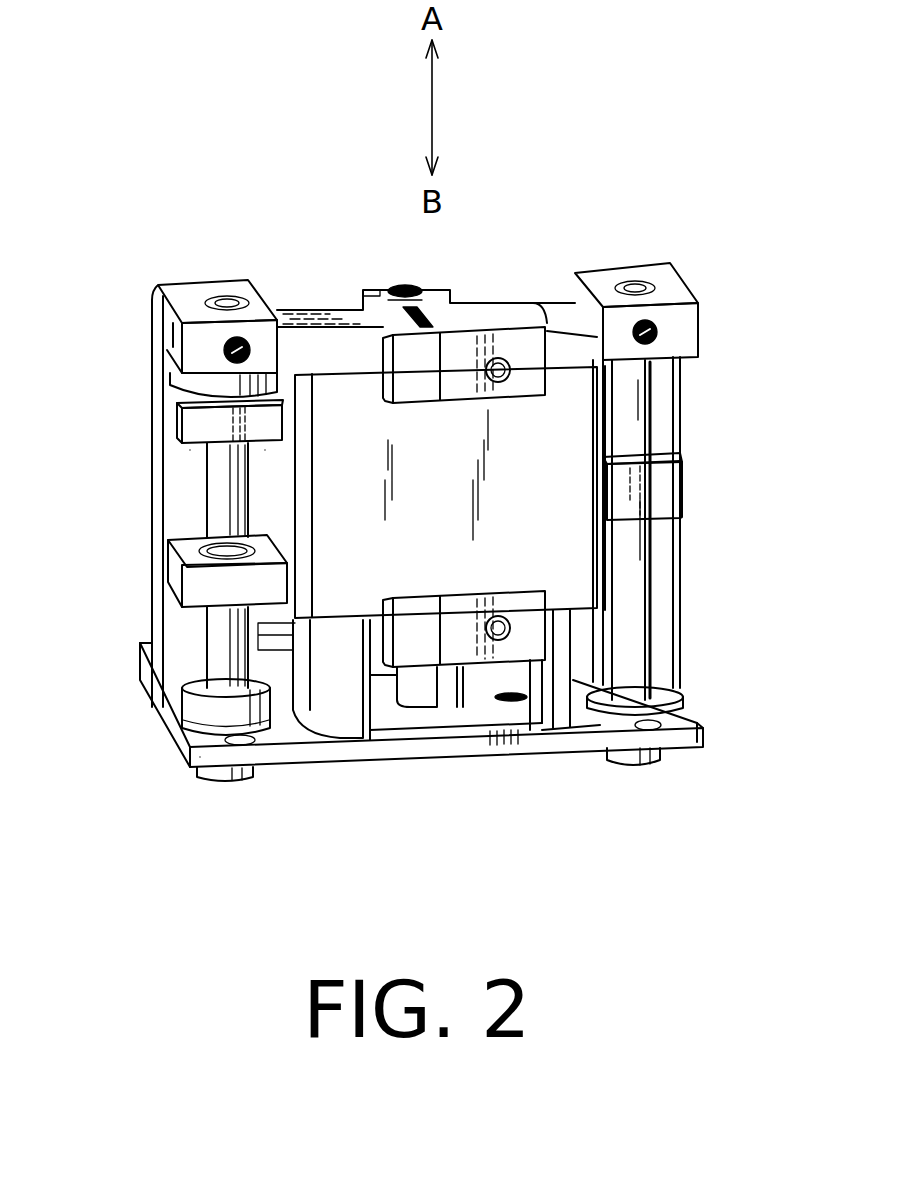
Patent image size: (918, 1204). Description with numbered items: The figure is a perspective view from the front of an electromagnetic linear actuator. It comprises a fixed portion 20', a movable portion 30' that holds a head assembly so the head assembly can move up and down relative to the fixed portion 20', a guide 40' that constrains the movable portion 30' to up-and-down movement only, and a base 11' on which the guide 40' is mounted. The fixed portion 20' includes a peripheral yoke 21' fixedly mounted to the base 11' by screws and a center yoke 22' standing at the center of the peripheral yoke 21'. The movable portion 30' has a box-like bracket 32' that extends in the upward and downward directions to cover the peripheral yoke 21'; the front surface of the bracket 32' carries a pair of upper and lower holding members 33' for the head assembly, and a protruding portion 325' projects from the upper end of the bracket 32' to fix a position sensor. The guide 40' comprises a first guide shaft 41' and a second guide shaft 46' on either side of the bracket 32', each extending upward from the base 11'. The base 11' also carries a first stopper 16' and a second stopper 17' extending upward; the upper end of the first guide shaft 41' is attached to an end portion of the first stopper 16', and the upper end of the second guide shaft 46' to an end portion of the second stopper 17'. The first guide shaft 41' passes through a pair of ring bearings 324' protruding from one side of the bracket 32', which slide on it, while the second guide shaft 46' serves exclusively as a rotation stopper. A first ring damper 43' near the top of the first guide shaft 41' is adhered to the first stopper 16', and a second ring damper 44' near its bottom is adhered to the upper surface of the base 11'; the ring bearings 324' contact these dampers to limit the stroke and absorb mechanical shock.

The base 11' is at (445, 802).
The first stopper 16' is at (176, 493).
The second stopper 17' is at (684, 475).
The fixed portion 20' is at (421, 763).
The peripheral yoke 21' is at (314, 737).
The center yoke 22' is at (485, 732).
The movable portion 30' is at (437, 251).
The bracket 32' is at (435, 415).
The holding members 33' is at (488, 538).
The guide 40' is at (431, 463).
The first guide shaft 41' is at (156, 565).
The first ring damper 43' is at (171, 381).
The second ring damper 44' is at (167, 717).
The second guide shaft 46' is at (686, 537).
The ring bearings 324' is at (149, 510).
The protruding portion 325' is at (565, 342).